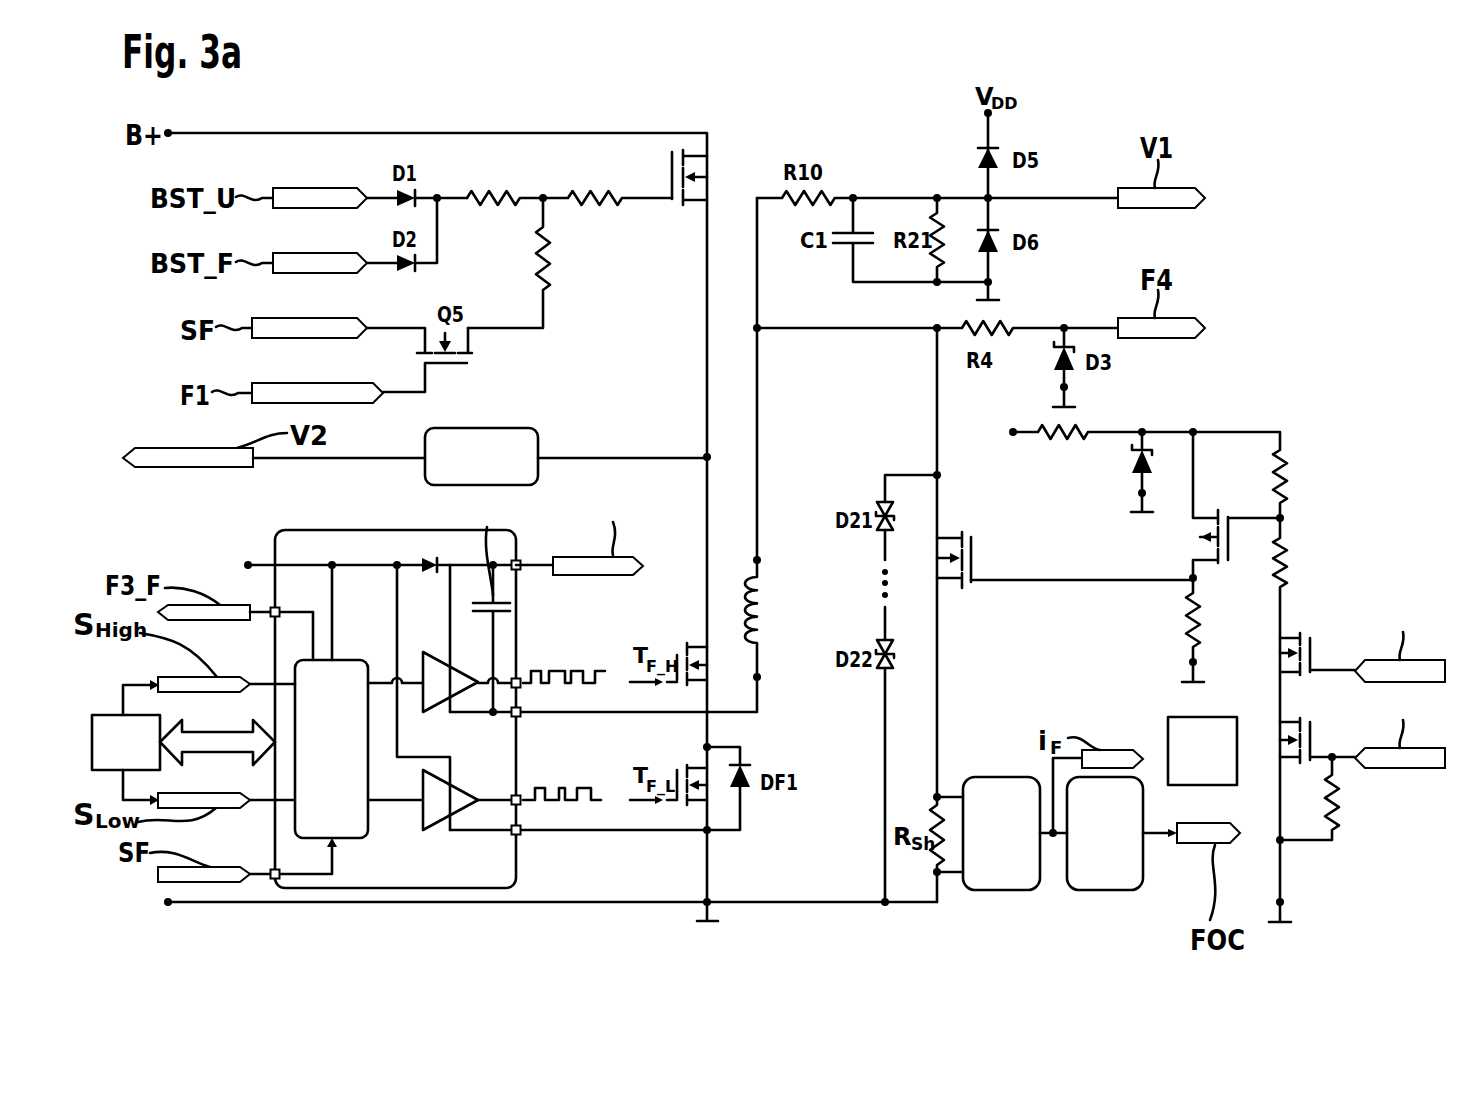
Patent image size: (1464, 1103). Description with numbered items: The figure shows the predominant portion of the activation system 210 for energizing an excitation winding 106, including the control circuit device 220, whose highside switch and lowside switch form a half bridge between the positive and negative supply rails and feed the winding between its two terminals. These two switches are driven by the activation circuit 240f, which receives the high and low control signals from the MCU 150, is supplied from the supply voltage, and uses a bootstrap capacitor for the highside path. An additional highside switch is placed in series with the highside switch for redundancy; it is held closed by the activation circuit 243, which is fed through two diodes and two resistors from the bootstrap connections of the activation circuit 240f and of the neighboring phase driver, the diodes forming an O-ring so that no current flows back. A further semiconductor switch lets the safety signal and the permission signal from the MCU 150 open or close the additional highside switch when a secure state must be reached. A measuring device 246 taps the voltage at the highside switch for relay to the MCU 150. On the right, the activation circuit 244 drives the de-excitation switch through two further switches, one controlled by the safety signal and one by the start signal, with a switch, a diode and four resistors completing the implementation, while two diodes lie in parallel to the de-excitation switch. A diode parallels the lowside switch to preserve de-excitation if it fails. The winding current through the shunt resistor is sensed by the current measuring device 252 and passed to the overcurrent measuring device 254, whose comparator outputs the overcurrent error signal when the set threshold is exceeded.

The activation system 210 is at (707, 117).
The activation circuit 243 is at (565, 228).
The measuring device 246 is at (538, 443).
The activation circuit 244 is at (1325, 413).
The excitation winding 106 is at (760, 605).
The MCU 150 is at (1170, 717).
The activation circuit 240f is at (518, 857).
The control circuit device 220 is at (578, 889).
The current measuring device 252 is at (1015, 890).
The overcurrent measuring device 254 is at (1115, 890).